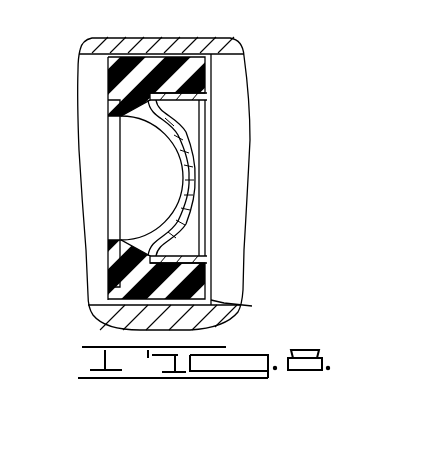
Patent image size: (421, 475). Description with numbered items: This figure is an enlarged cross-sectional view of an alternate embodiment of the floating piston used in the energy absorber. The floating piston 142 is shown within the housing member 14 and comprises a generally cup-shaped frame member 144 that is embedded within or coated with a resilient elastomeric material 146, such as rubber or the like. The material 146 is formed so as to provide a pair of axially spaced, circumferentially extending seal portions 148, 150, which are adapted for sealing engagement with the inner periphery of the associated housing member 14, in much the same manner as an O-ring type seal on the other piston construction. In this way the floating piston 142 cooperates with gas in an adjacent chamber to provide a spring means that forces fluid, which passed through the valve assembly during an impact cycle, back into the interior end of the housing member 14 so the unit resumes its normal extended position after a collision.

The housing member 14 is at (125, 28).
The floating piston 142 is at (216, 157).
The frame member 144 is at (172, 132).
The resilient elastomeric material 146 is at (205, 282).
The seal portion 148 is at (97, 312).
The seal portion 150 is at (224, 303).